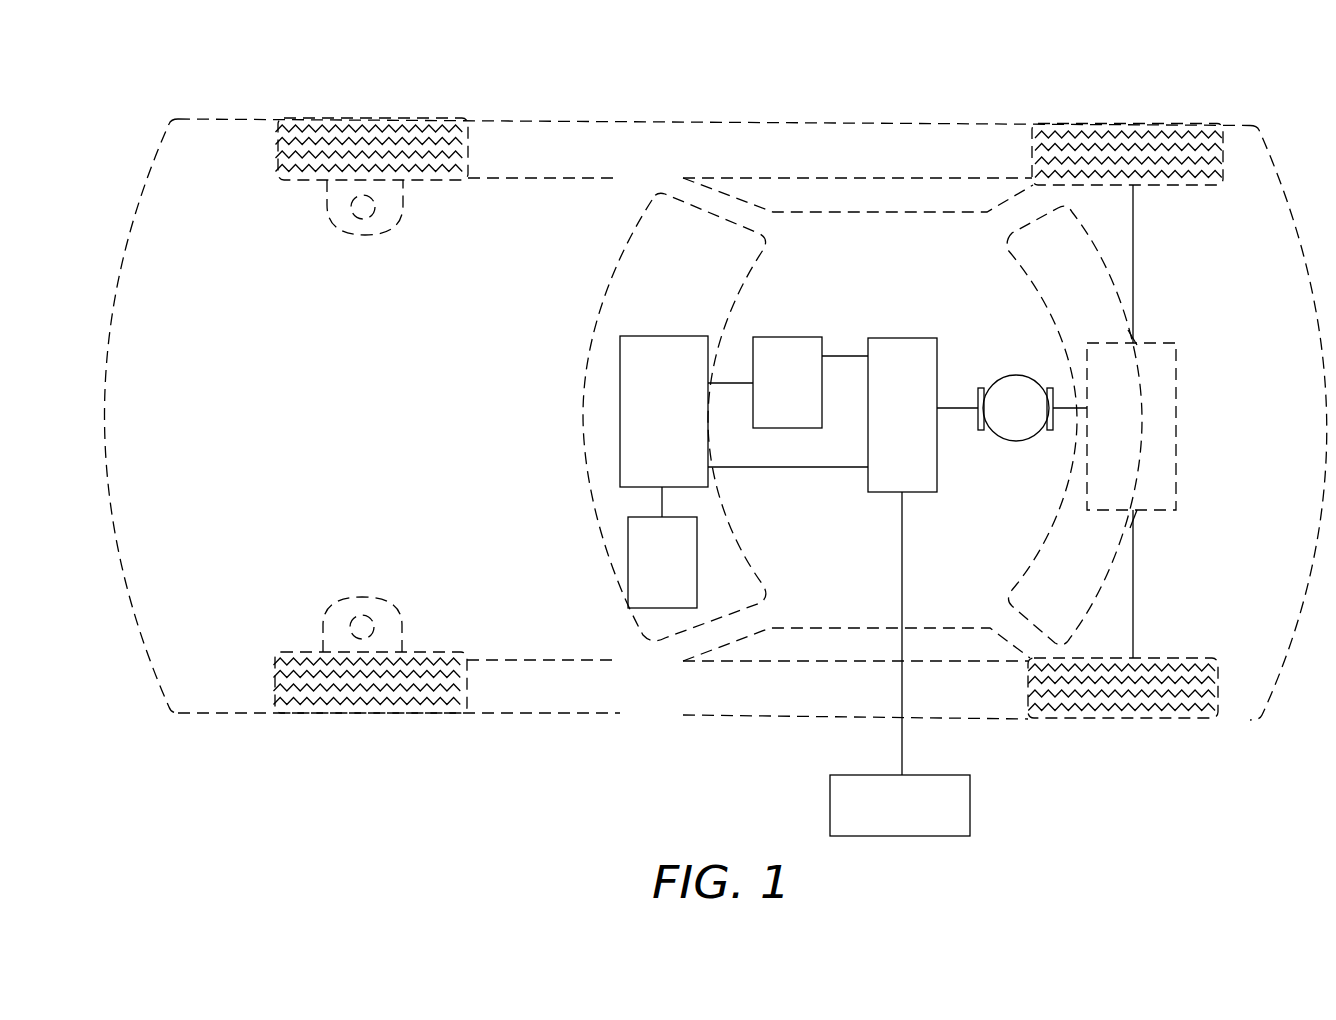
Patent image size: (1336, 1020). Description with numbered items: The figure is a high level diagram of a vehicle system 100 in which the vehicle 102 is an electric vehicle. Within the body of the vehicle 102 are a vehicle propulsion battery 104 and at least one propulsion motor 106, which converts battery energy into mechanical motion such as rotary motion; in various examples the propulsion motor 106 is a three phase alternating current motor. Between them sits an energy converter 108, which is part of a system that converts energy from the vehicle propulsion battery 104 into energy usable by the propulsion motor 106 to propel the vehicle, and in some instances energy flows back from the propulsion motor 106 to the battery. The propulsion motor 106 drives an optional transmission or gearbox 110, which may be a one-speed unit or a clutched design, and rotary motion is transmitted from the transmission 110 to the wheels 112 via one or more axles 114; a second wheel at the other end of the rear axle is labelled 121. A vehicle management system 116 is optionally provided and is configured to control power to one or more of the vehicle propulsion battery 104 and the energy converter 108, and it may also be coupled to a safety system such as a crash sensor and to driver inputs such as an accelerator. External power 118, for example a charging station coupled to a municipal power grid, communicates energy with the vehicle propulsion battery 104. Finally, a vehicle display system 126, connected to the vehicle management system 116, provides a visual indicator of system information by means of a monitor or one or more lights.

The vehicle system 100 is at (525, 105).
The vehicle 102 is at (714, 120).
The vehicle propulsion battery 104 is at (805, 337).
The propulsion motor 106 is at (1016, 375).
The energy converter 108 is at (920, 338).
The transmission 110 is at (1160, 345).
The wheels 112 is at (1127, 123).
The axles 114 is at (1133, 237).
The vehicle management system 116 is at (662, 336).
The external power 118 is at (953, 775).
The drive wheel 121 is at (1128, 720).
The vehicle display system 126 is at (628, 567).